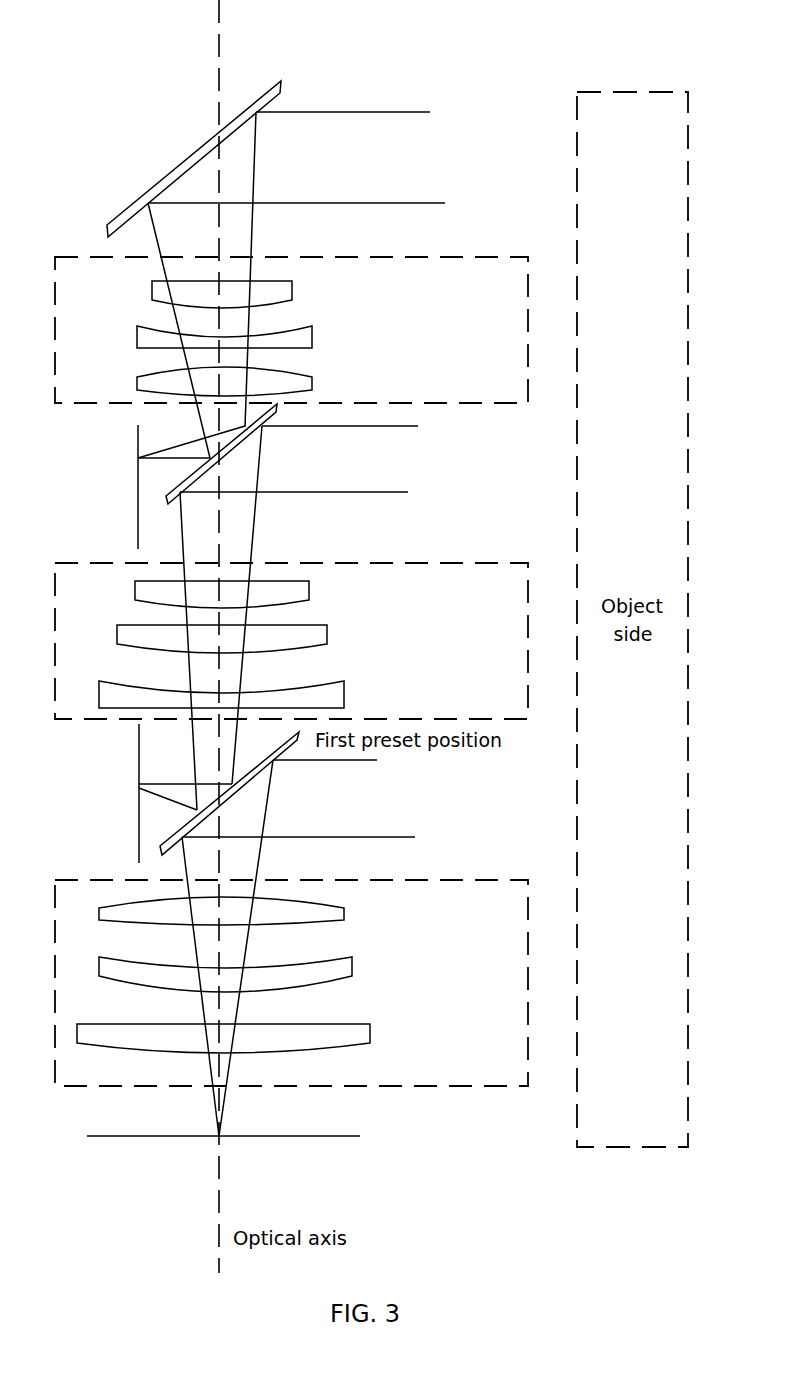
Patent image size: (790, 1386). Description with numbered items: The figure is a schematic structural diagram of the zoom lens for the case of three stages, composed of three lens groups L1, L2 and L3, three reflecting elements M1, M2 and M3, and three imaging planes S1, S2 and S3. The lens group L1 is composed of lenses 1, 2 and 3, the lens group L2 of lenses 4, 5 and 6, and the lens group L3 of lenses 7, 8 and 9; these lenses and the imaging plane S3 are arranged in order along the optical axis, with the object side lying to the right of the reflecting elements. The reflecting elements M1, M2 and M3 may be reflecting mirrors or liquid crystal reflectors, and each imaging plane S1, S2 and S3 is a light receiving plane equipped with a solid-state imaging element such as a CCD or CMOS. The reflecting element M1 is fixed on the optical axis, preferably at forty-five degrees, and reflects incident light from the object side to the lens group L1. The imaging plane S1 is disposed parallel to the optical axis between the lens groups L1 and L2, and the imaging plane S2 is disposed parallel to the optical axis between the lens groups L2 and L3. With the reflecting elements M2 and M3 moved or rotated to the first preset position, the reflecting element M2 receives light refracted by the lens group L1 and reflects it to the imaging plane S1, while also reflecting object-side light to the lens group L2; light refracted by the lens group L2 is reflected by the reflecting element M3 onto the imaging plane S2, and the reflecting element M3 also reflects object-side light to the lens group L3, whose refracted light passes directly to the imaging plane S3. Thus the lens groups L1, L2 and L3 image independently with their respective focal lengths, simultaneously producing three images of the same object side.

The lens 1 is at (259, 293).
The lens 2 is at (253, 337).
The lens 3 is at (253, 381).
The lens 4 is at (257, 594).
The lens 5 is at (248, 639).
The lens 6 is at (239, 694).
The lens 7 is at (247, 912).
The lens 8 is at (249, 974).
The lens 9 is at (243, 1038).
The lens group L1 is at (291, 330).
The lens group L2 is at (291, 641).
The lens group L3 is at (291, 983).
The reflecting element M1 is at (194, 159).
The reflecting element M2 is at (221, 454).
The reflecting element M3 is at (229, 793).
The imaging plane S1 is at (172, 487).
The imaging plane S2 is at (166, 793).
The imaging plane S3 is at (223, 1115).